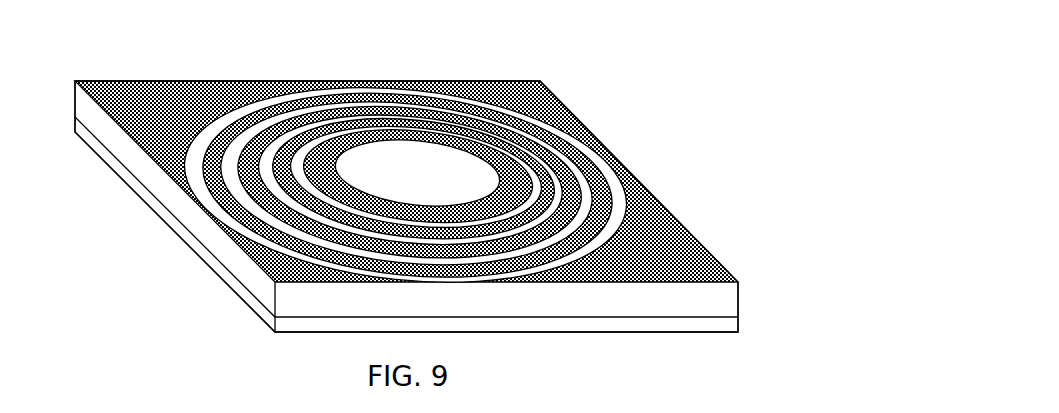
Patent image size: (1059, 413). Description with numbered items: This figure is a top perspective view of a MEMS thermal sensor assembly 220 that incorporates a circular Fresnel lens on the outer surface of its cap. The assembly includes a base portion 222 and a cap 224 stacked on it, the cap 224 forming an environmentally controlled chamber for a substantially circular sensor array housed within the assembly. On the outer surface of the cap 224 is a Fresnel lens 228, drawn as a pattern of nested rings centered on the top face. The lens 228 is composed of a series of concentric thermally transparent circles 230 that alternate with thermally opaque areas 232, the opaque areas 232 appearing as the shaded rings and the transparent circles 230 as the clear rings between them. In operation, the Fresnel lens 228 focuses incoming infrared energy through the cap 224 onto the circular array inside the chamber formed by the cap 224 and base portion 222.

The MEMS thermal sensor assembly 220 is at (731, 90).
The base portion 222 is at (738, 327).
The cap 224 is at (738, 292).
The Fresnel lens 228 is at (314, 66).
The thermally transparent circles 230 is at (431, 189).
The thermally opaque areas 232 is at (213, 124).